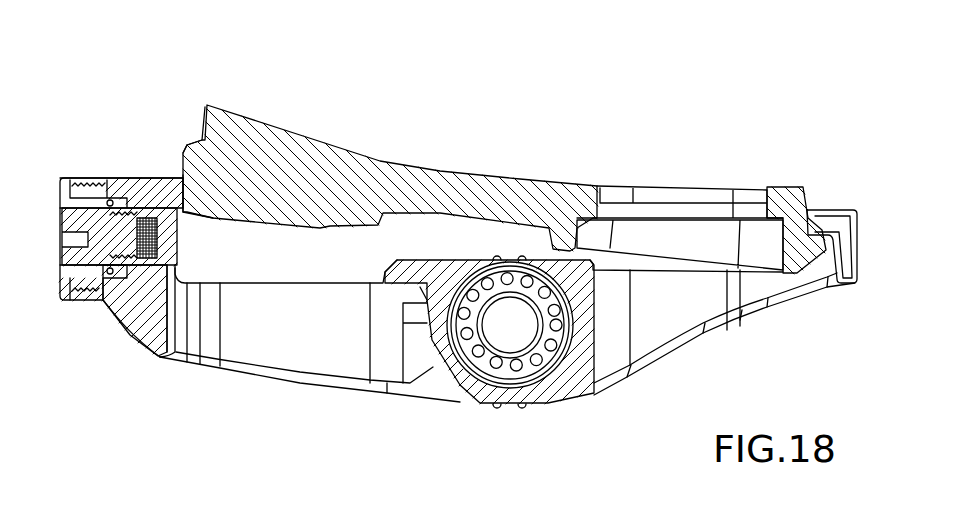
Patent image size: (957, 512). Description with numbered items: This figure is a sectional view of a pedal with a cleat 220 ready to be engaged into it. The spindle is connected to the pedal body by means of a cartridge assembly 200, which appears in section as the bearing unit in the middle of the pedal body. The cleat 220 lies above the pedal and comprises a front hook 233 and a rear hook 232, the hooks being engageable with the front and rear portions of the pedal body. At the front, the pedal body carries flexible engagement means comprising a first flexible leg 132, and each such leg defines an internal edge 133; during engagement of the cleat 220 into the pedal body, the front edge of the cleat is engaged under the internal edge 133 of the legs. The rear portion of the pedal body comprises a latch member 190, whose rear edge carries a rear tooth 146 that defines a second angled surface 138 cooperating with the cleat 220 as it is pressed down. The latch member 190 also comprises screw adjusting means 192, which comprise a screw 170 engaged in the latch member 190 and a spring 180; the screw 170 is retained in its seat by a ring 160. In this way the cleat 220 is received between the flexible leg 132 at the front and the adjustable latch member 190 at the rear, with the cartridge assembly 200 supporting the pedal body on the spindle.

The first flexible leg 132 is at (843, 257).
The internal edge 133 is at (828, 212).
The second angled surface 138 is at (201, 174).
The rear tooth 146 is at (186, 168).
The ring 160 is at (64, 174).
The screw 170 is at (60, 206).
The spring 180 is at (62, 270).
The latch member 190 is at (208, 286).
The screw adjusting means 192 is at (88, 322).
The cartridge assembly 200 is at (470, 410).
The cleat 220 is at (492, 155).
The rear hook 232 is at (238, 236).
The front hook 233 is at (778, 182).